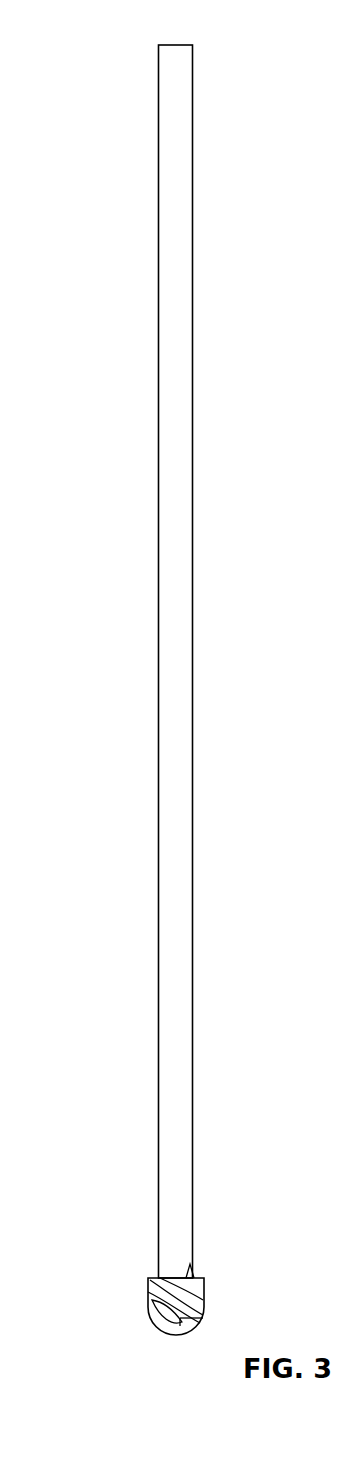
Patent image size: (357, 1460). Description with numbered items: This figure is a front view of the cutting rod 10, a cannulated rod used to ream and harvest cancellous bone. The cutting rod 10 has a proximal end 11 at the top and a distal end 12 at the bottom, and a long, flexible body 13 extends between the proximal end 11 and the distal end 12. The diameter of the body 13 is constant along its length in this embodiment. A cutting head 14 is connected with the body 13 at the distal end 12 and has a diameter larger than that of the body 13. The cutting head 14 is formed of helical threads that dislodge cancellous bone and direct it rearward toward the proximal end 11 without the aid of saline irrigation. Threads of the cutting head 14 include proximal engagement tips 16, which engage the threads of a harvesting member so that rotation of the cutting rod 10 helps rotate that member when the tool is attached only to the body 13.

The cutting rod 10 is at (113, 45).
The proximal end 11 is at (230, 44).
The distal end 12 is at (227, 1285).
The flexible body 13 is at (159, 850).
The cutting head 14 is at (152, 1293).
The proximal engagement tips 16 is at (191, 1278).